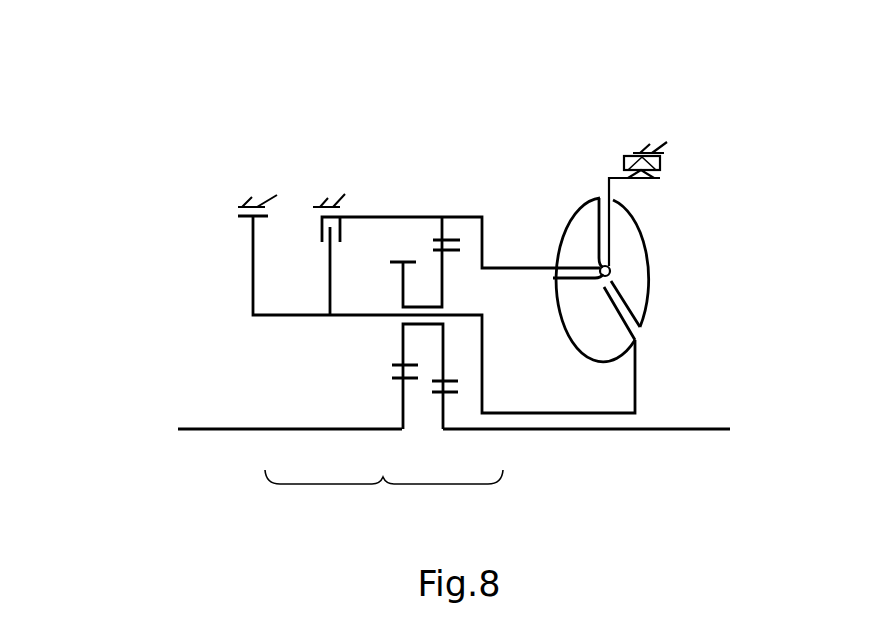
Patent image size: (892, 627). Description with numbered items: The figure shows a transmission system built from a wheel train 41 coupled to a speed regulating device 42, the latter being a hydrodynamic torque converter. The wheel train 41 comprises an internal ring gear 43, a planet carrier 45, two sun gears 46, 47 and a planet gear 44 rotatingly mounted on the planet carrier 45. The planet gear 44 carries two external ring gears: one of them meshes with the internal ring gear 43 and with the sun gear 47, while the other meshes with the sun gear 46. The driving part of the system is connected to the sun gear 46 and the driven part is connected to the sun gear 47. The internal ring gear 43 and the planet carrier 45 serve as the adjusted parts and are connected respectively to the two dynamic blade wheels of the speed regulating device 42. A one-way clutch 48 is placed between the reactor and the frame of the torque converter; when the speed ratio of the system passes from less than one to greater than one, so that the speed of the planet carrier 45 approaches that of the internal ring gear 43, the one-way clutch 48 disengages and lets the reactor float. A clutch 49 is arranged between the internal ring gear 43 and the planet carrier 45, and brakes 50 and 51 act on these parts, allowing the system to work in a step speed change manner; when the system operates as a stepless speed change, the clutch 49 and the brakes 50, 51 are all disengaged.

The wheel train 41 is at (384, 423).
The speed regulating device 42 is at (672, 270).
The internal ring gear 43 is at (457, 242).
The planet gear 44 is at (405, 292).
The planet carrier 45 is at (253, 277).
The sun gear 46 is at (238, 429).
The sun gear 47 is at (513, 429).
The one-way clutch 48 is at (645, 153).
The clutch 49 is at (322, 240).
The brake 50 is at (343, 205).
The brake 51 is at (248, 197).